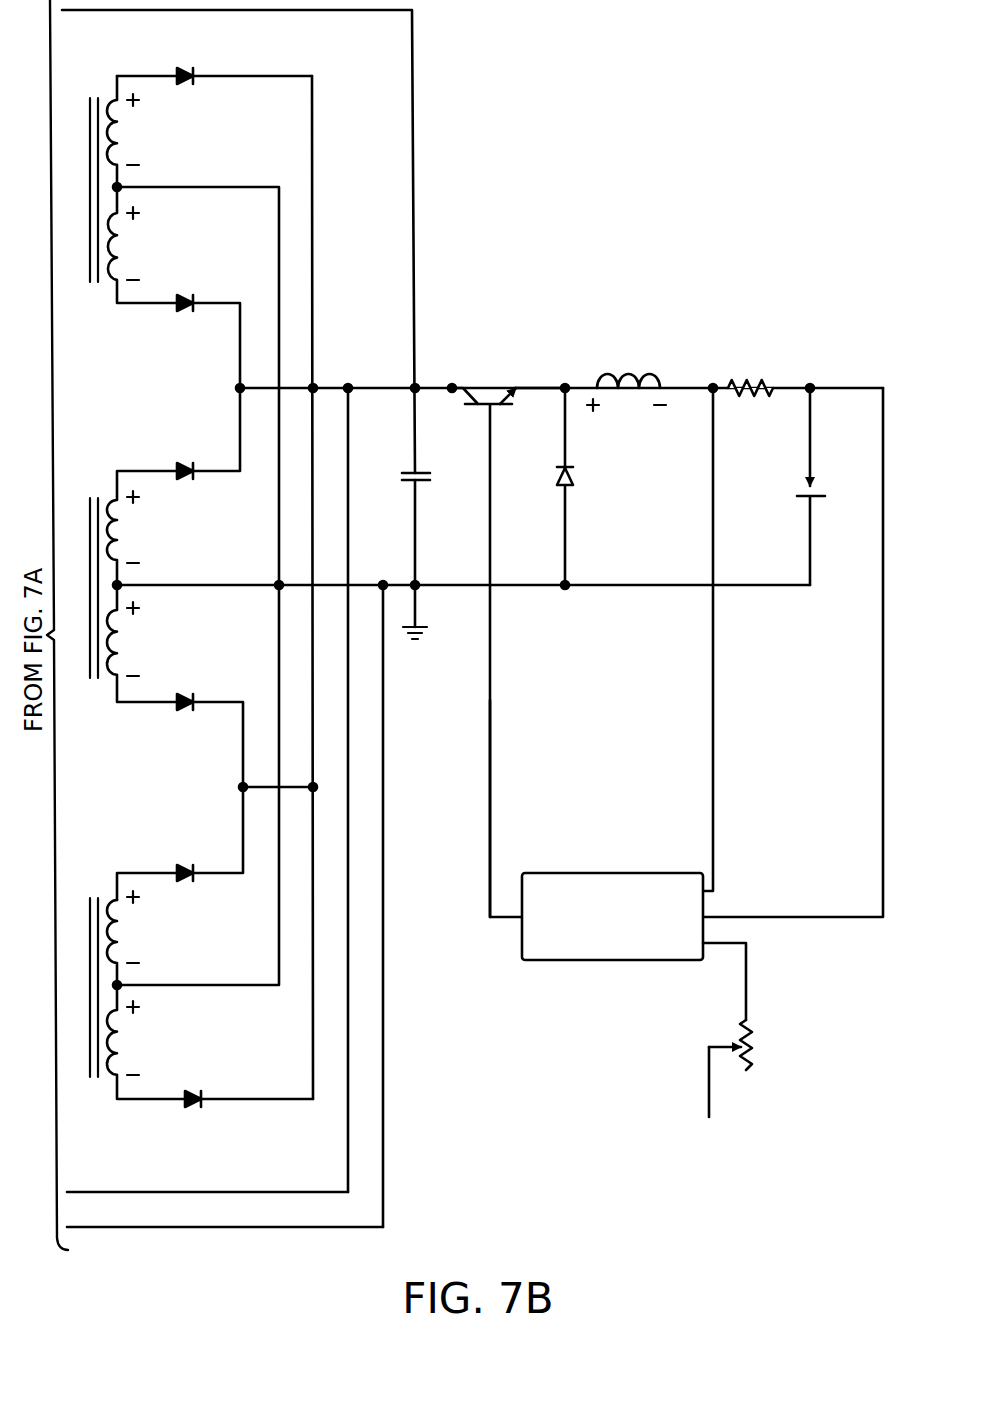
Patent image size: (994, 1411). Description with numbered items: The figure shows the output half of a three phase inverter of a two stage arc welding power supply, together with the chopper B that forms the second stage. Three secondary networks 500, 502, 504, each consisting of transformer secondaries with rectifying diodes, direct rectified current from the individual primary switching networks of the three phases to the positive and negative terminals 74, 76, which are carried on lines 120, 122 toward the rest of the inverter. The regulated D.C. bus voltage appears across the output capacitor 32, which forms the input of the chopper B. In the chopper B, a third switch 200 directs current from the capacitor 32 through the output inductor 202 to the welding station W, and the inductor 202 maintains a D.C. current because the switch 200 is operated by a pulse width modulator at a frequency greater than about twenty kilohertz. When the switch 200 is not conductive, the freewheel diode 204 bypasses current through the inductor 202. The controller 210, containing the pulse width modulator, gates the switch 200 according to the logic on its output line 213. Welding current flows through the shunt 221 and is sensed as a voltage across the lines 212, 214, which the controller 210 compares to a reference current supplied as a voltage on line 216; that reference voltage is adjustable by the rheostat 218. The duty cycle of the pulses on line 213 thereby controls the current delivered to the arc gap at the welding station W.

The secondary network 500 is at (228, 96).
The secondary network 502 is at (200, 527).
The secondary network 504 is at (226, 1080).
The positive terminal 74 is at (350, 386).
The negative terminal 76 is at (384, 582).
The conductor line 120 is at (176, 1190).
The conductor line 122 is at (153, 1229).
The output capacitor 32 is at (430, 482).
The third switch 200 is at (491, 400).
The output inductor 202 is at (640, 377).
The freewheel diode 204 is at (578, 478).
The shunt 221 is at (752, 384).
The controller 210 is at (616, 870).
The sense line 212 is at (712, 711).
The output line 213 is at (492, 731).
The sense line 214 is at (882, 698).
The reference line 216 is at (748, 993).
The rheostat 218 is at (754, 1051).
The chopper B is at (572, 352).
The welding station W is at (825, 486).